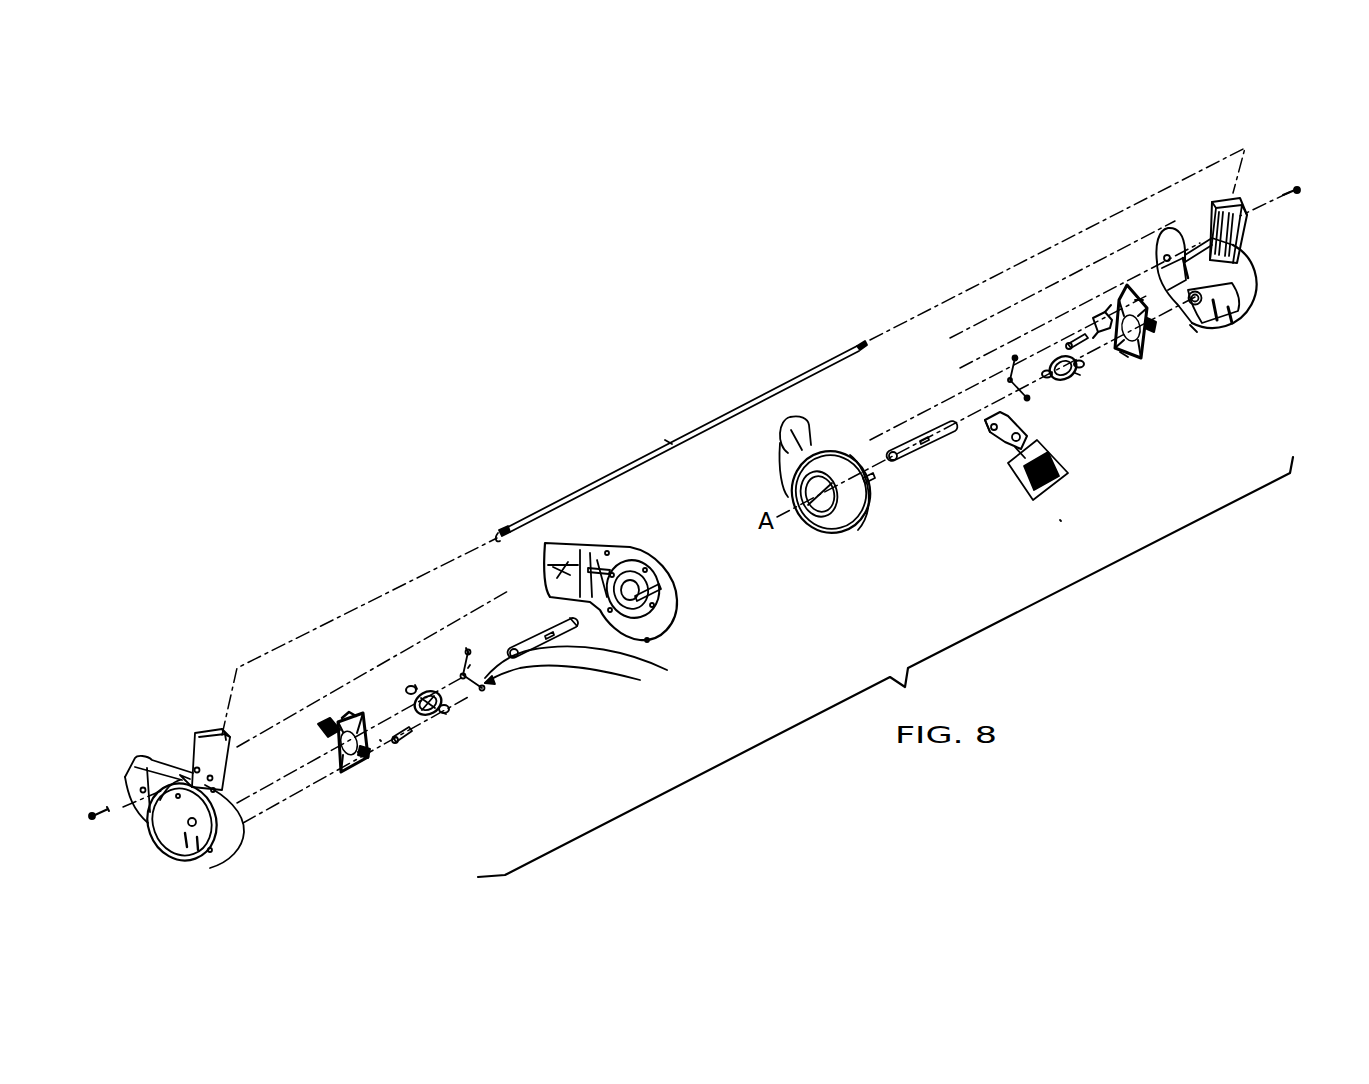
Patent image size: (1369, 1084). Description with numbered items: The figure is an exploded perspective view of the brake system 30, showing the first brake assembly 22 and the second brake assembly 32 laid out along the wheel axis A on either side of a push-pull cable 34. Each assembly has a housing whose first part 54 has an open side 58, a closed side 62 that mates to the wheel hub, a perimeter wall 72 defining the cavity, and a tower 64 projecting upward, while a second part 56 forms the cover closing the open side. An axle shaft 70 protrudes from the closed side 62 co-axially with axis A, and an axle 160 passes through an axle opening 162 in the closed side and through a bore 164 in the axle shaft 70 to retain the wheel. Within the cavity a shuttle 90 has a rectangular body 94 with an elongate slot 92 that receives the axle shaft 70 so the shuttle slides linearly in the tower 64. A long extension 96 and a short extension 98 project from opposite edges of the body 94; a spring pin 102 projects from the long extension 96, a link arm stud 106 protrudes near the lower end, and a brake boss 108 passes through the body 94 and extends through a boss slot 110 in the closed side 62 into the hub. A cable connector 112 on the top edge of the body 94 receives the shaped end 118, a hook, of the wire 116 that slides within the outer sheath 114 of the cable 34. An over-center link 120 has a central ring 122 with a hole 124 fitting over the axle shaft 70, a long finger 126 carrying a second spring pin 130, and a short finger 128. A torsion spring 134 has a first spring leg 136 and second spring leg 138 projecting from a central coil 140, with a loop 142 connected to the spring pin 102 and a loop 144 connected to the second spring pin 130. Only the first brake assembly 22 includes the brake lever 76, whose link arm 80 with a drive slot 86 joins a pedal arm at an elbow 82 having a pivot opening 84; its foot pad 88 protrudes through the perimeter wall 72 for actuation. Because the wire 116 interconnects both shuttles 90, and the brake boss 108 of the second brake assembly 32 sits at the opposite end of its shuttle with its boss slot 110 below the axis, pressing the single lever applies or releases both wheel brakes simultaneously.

The first brake assembly 22 is at (1060, 527).
The brake system 30 is at (660, 257).
The second brake assembly 32 is at (465, 803).
The push-pull cable 34 is at (670, 437).
The first part 54 is at (211, 809).
The second part 56 is at (660, 557).
The open side 58 is at (1182, 300).
The closed side 62 is at (173, 818).
The tower 64 is at (205, 752).
The axle shaft 70 is at (1217, 290).
The perimeter wall 72 is at (237, 825).
The brake lever 76 is at (1038, 457).
The link arm 80 is at (975, 457).
The elbow 82 is at (1010, 447).
The pivot opening 84 is at (993, 430).
The drive slot 86 is at (987, 423).
The foot pad 88 is at (1067, 480).
The shuttle 90 is at (777, 484).
The slot 92 is at (332, 753).
The body 94 is at (1160, 303).
The long extension 96 is at (322, 725).
The short extension 98 is at (365, 757).
The spring pin 102 is at (1103, 313).
The link arm stud 106 is at (1127, 357).
The brake boss 108 is at (412, 733).
The boss slot 110 is at (182, 863).
The cable connector 112 is at (345, 712).
The outer sheath 114 is at (699, 397).
The wire 116 is at (510, 523).
The shaped end 118 is at (498, 528).
The over-center link 120 is at (761, 535).
The central ring 122 is at (433, 718).
The hole 124 is at (450, 704).
The long finger 126 is at (415, 684).
The short finger 128 is at (443, 708).
The second spring pin 130 is at (407, 684).
The torsion spring 134 is at (1000, 383).
The first spring leg 136 is at (468, 652).
The second spring leg 138 is at (575, 622).
The central coil 140 is at (473, 667).
The loop 142 is at (470, 665).
The loop 144 is at (562, 679).
The axle 160 is at (557, 620).
The axle opening 162 is at (179, 787).
The bore 164 is at (1195, 330).